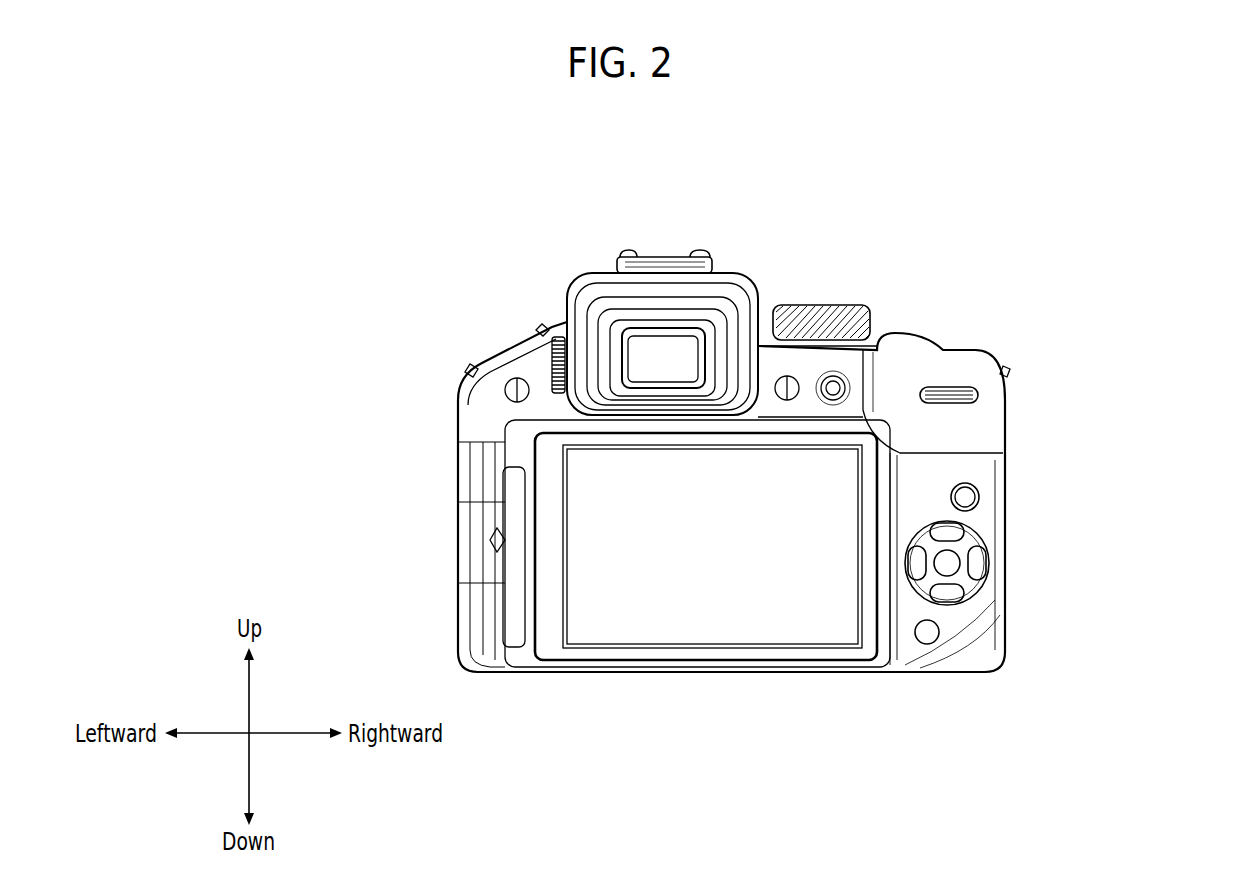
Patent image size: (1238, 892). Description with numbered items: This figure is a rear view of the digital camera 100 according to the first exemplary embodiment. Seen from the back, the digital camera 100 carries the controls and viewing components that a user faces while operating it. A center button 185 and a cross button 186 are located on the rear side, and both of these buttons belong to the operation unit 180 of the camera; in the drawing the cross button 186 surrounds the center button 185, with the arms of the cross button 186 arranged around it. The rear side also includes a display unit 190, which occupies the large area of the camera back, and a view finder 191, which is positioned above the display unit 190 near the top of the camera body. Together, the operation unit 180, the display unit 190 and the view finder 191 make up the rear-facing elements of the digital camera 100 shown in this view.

The digital camera 100 is at (946, 233).
The operation unit 180 is at (1105, 507).
The center button 185 is at (950, 570).
The cross button 186 is at (945, 590).
The display unit 190 is at (645, 620).
The view finder 191 is at (663, 357).